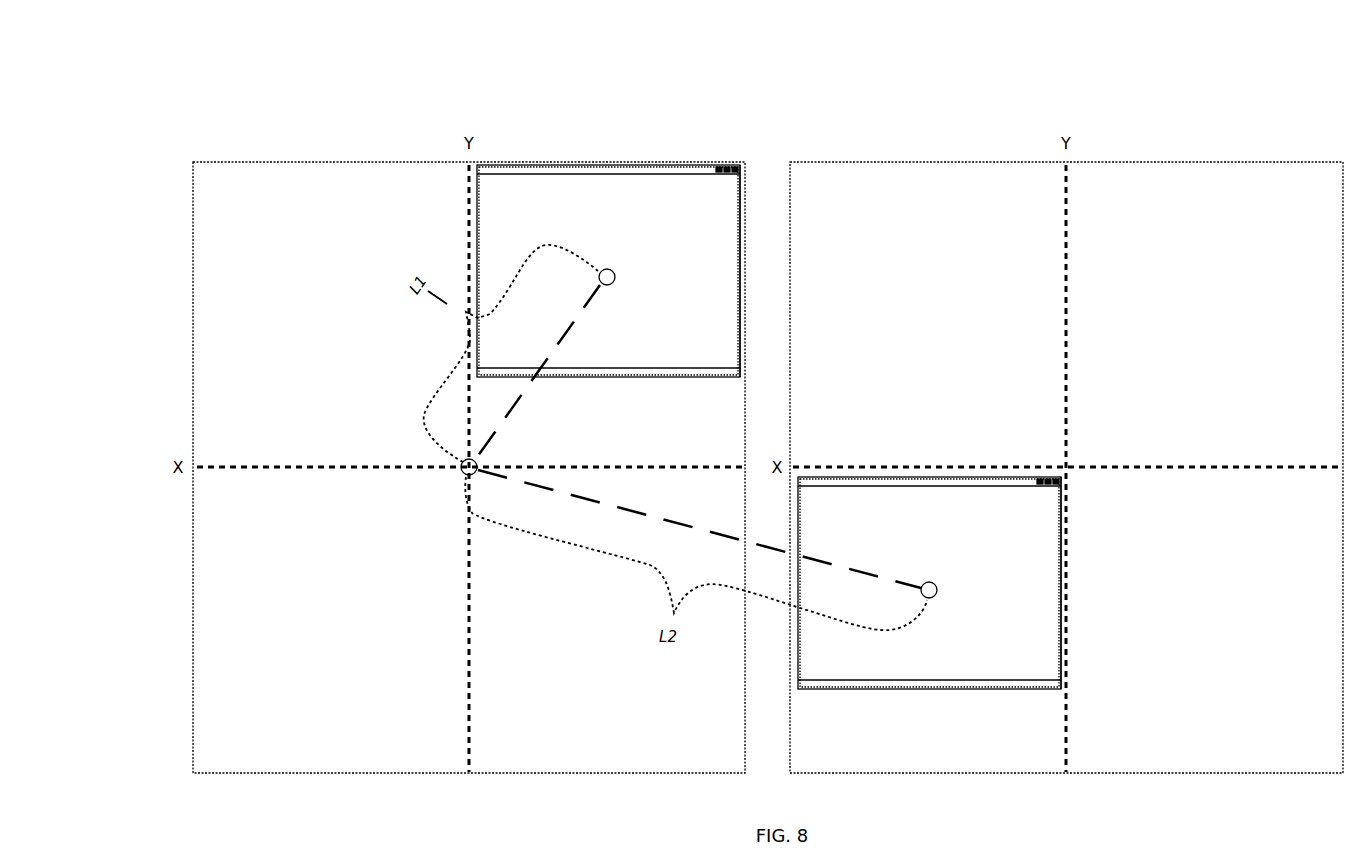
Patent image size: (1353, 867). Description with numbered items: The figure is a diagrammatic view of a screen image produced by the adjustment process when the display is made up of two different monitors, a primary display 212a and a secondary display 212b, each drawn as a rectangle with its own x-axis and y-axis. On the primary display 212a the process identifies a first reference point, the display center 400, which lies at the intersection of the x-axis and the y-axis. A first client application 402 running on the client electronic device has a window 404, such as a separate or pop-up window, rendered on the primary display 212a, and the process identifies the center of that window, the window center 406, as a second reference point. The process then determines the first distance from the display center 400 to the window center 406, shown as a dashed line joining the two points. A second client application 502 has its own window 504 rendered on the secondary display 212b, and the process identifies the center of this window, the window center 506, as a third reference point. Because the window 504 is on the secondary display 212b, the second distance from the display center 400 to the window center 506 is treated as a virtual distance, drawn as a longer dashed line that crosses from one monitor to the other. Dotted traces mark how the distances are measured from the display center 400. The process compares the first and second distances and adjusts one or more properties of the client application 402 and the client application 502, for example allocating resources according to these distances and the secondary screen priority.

The primary display 212a is at (467, 55).
The secondary display 212b is at (1042, 55).
The display center 400 is at (478, 466).
The client application 402 is at (498, 228).
The window 404 is at (741, 269).
The window center 406 is at (613, 279).
The client application 502 is at (807, 537).
The window 504 is at (1063, 606).
The window center 506 is at (938, 590).